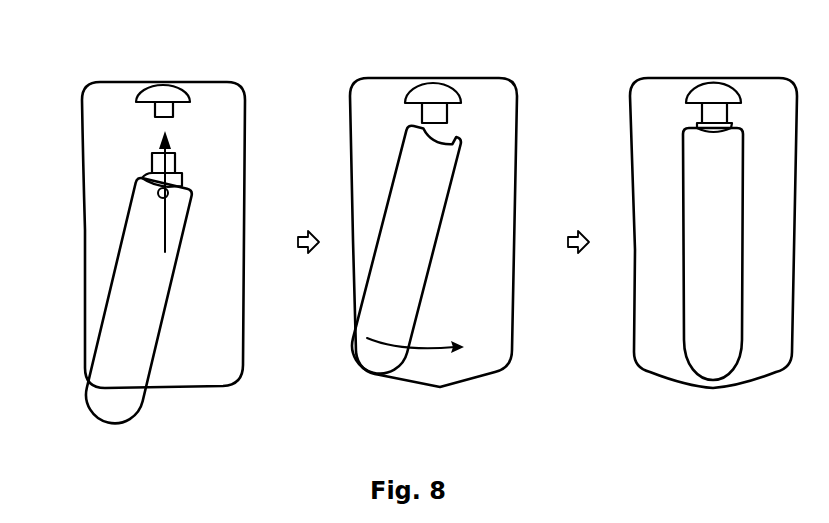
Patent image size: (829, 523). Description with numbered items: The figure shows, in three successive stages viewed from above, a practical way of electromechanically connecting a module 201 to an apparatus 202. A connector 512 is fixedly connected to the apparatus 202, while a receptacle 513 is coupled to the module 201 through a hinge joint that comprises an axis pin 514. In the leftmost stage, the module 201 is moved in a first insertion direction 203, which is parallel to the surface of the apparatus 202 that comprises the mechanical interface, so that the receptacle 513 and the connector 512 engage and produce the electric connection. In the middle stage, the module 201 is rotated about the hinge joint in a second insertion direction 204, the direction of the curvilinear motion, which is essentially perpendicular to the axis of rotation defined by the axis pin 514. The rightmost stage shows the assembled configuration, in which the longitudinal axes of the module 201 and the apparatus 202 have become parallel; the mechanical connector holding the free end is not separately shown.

The module 201 is at (86, 393).
The apparatus 202 is at (95, 130).
The first insertion direction 203 is at (152, 166).
The second insertion direction 204 is at (428, 348).
The connector 512 is at (163, 110).
The receptacle 513 is at (165, 163).
The axis pin 514 is at (170, 191).